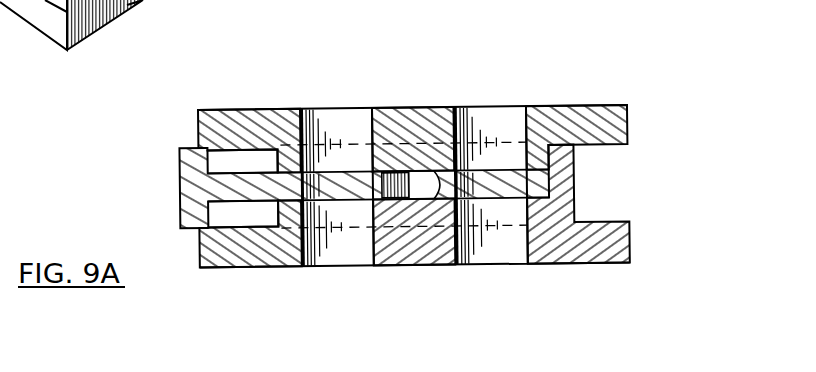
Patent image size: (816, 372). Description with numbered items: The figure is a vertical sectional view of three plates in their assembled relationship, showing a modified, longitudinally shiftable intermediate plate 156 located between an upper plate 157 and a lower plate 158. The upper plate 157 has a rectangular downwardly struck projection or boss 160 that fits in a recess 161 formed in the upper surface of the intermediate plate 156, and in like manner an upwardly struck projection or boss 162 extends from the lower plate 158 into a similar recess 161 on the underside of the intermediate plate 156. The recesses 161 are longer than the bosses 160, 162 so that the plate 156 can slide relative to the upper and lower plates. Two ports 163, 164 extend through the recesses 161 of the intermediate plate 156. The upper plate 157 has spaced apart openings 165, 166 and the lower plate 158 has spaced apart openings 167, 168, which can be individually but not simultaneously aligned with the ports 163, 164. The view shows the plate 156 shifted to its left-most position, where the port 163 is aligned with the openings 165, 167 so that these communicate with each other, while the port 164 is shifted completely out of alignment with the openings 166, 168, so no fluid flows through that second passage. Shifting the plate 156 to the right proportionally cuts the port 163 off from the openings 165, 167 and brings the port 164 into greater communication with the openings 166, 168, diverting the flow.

The intermediate plate 156 is at (323, 175).
The upper plate 157 is at (578, 86).
The lower plate 158 is at (592, 204).
The projection or boss 160 is at (423, 202).
The recess 161 is at (232, 158).
The projection or boss 162 is at (476, 236).
The port 163 is at (346, 178).
The port 164 is at (409, 184).
The opening 165 is at (328, 124).
The opening 166 is at (497, 116).
The opening 167 is at (345, 252).
The opening 168 is at (490, 258).